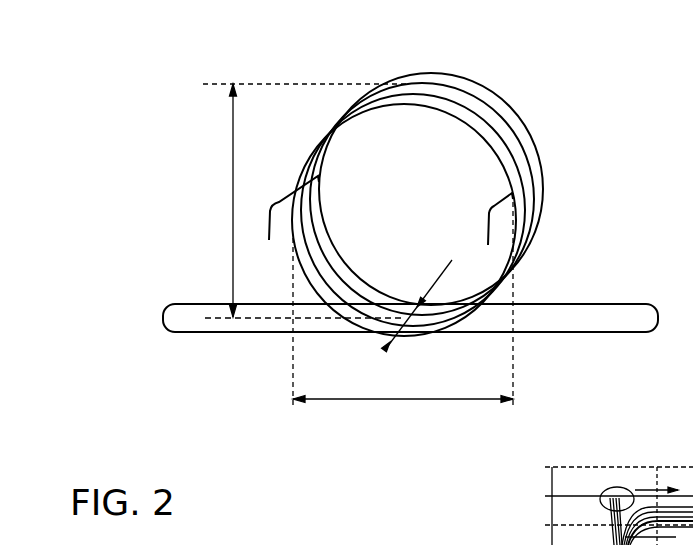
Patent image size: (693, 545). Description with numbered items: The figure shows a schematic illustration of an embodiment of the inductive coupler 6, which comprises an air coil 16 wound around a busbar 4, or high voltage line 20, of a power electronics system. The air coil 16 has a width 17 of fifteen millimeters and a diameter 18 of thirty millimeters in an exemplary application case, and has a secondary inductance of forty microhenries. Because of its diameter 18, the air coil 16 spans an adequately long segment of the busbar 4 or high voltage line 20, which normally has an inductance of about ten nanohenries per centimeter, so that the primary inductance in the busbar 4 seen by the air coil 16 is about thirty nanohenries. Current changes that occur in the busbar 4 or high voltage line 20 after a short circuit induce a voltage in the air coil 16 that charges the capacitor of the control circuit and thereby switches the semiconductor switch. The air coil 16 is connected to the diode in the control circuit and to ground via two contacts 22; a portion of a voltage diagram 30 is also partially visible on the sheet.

The inductive coupler 6 is at (190, 83).
The air coil 16 is at (490, 87).
The contacts 22 is at (278, 202).
The busbar 4 is at (403, 287).
The high voltage line 20 is at (181, 319).
The diameter 18 is at (233, 199).
The width 17 is at (430, 287).
The voltage diagram 30 is at (552, 479).